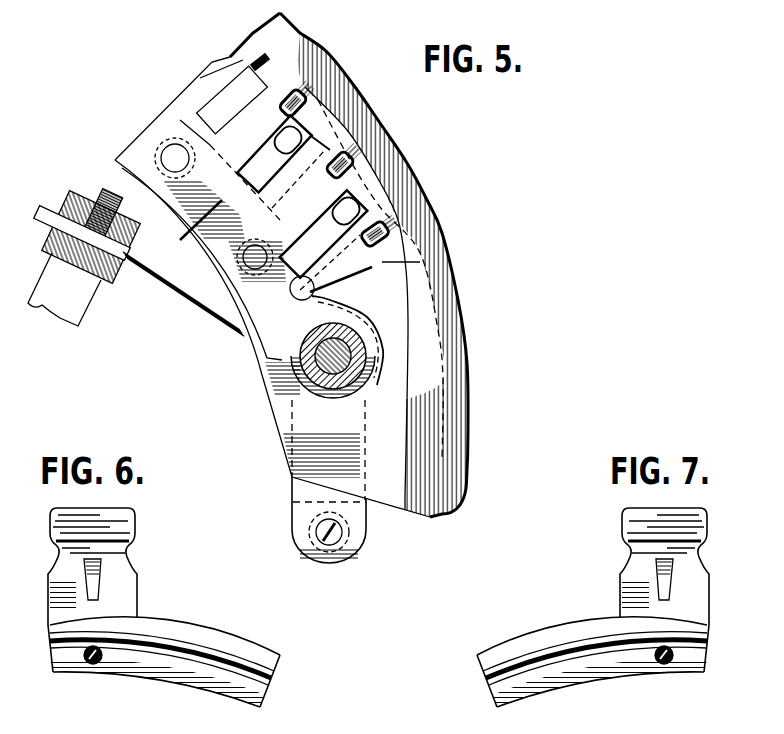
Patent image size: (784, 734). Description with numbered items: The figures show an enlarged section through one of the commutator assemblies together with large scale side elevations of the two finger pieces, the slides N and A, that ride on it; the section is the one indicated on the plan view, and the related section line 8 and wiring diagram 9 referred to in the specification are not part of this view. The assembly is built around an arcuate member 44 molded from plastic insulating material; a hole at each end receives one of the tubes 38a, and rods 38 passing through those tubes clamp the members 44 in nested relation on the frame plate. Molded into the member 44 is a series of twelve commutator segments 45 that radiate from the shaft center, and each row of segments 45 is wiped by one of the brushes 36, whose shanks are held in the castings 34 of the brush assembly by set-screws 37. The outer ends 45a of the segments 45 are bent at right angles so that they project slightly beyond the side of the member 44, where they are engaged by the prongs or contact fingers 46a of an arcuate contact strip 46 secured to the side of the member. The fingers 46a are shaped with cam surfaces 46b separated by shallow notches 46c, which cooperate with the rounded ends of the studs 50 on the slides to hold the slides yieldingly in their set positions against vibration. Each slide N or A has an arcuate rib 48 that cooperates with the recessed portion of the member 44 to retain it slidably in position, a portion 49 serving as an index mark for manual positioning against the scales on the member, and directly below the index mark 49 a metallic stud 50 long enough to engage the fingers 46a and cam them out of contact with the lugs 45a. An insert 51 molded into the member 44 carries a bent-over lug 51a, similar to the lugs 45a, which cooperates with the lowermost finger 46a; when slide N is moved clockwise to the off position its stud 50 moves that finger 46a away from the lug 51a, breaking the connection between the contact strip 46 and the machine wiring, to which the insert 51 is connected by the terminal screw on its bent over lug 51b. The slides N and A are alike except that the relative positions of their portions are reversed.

In FIG. 5, the cover 8 is at (328, 51).
In FIG. 5, the cover housing wall 9 is at (389, 127).
In FIG. 5, the casting 34 is at (70, 292).
In FIG. 5, the brush 36 is at (177, 290).
In FIG. 5, the set-screw 37 is at (108, 198).
In FIG. 5, the rod 38 is at (349, 366).
In FIG. 5, the tube 38a is at (367, 351).
In FIG. 5, the arcuate member 44 is at (446, 307).
In FIG. 5, the commutator segment 45 is at (262, 120).
In FIG. 5, the outer end lug 45a is at (367, 170).
In FIG. 5, the contact strip 46 is at (256, 220).
In FIG. 5, the contact finger 46a is at (285, 91).
In FIG. 5, the cam surface 46b is at (295, 114).
In FIG. 5, the notch 46c is at (262, 56).
In FIG. 6, the arcuate rib 48 is at (175, 644).
In FIG. 7, the arcuate rib 48 is at (567, 647).
In FIG. 6, the index mark 49 is at (101, 574).
In FIG. 7, the index mark 49 is at (671, 573).
In FIG. 6, the stud 50 is at (92, 661).
In FIG. 7, the stud 50 is at (665, 661).
In FIG. 5, the insert 51 is at (366, 450).
In FIG. 5, the bent-over lug 51a is at (420, 262).
In FIG. 5, the bent over lug 51b is at (364, 527).
In FIG. 6, the slide N is at (130, 547).
In FIG. 7, the slide A is at (630, 548).